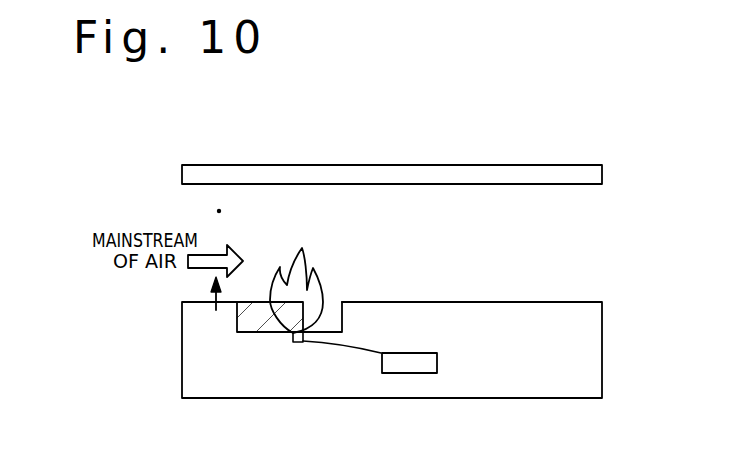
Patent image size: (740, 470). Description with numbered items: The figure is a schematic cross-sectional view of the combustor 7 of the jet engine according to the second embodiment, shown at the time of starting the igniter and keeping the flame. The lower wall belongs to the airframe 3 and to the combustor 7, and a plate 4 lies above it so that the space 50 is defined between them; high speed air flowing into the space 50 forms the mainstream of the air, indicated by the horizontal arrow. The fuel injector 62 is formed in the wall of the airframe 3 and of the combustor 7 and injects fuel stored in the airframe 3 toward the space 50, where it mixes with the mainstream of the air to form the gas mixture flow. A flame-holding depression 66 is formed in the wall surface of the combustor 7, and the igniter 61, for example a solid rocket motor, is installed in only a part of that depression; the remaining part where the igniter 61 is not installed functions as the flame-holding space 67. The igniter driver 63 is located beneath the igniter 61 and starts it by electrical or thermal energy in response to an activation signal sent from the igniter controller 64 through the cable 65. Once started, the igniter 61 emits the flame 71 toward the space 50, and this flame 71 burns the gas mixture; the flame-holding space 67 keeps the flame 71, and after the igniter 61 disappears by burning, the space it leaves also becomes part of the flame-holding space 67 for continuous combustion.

The airframe 3 is at (203, 392).
The upper plate 4 is at (363, 176).
The combustor 7 is at (640, 165).
The space 50 is at (219, 211).
The igniter 61 is at (247, 320).
The fuel injector 62 is at (216, 310).
The igniter driver 63 is at (293, 343).
The igniter controller 64 is at (432, 362).
The cable 65 is at (352, 350).
The flame-holding depression 66 is at (268, 333).
The flame-holding space 67 is at (340, 324).
The flame 71 is at (313, 277).